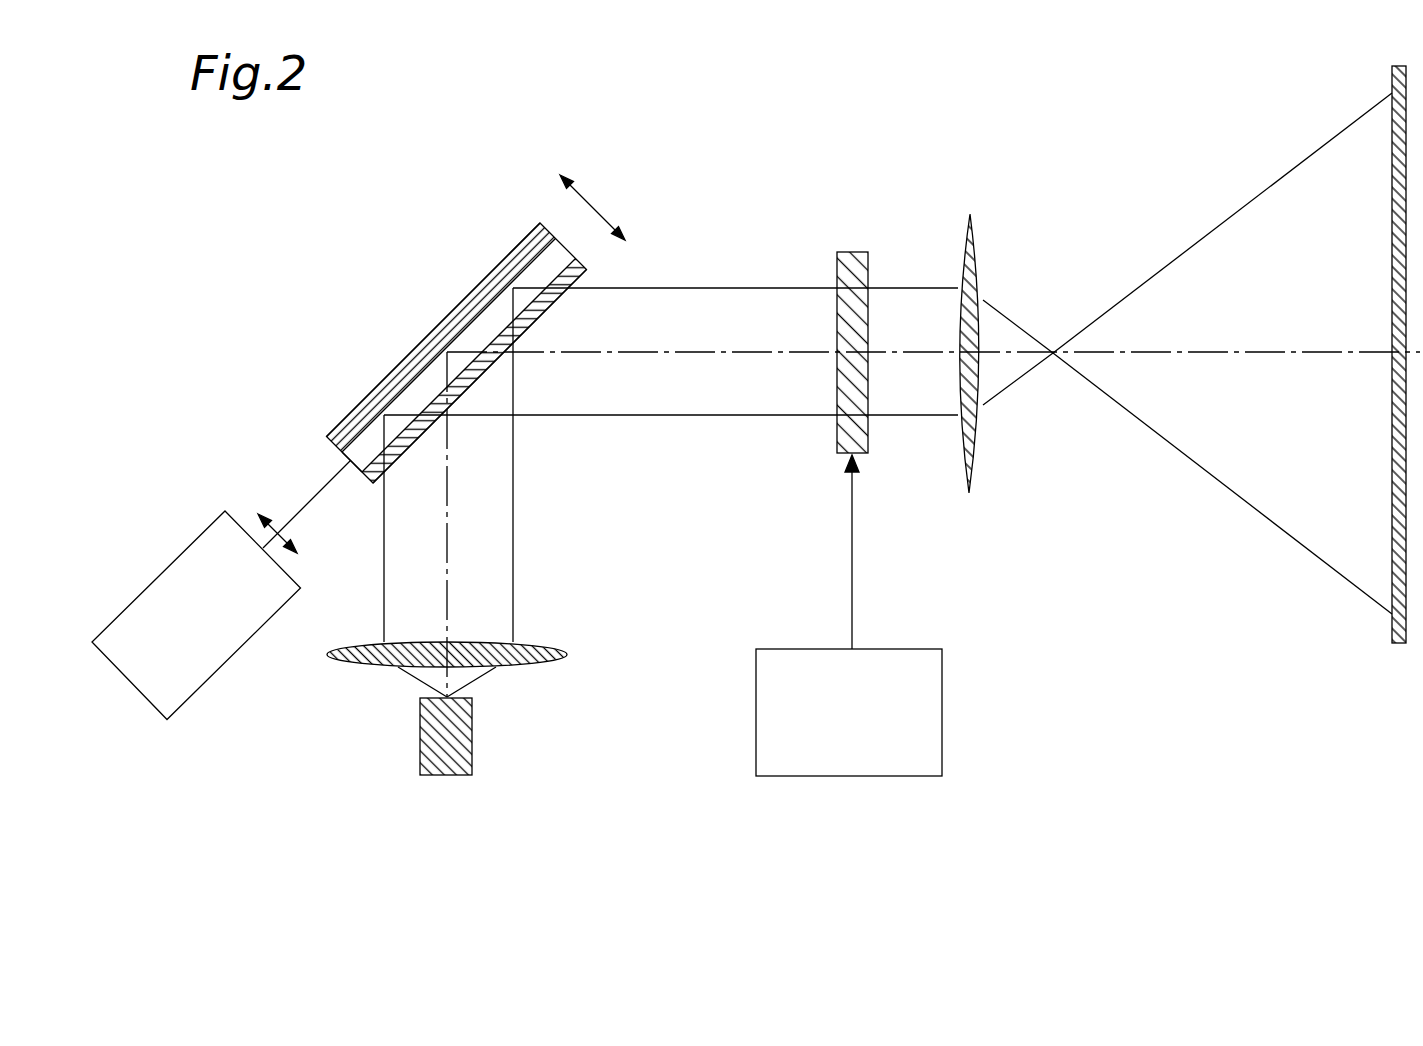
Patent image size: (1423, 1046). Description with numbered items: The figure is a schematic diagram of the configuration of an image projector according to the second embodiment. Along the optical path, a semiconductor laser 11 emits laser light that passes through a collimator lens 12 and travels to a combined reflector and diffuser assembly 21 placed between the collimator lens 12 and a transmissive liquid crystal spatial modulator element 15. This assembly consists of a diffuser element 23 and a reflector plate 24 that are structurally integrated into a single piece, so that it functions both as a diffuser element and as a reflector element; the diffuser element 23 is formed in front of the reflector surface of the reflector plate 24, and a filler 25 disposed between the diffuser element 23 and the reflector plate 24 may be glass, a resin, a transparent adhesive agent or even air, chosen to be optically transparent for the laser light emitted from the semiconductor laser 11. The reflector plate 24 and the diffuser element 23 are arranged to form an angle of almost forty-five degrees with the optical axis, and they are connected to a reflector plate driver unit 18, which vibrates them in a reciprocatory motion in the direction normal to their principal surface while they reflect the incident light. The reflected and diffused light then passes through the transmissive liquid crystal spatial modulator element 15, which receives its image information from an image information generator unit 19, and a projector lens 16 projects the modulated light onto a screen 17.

The semiconductor laser 11 is at (472, 733).
The collimator lens 12 is at (556, 656).
The transmissive liquid crystal spatial modulator element 15 is at (855, 252).
The projector lens 16 is at (978, 246).
The screen 17 is at (1391, 178).
The reflector plate driver unit 18 is at (192, 697).
The image information generator unit 19 is at (892, 649).
The reflector unit 21 is at (341, 423).
The diffuser element 23 is at (583, 265).
The reflector plate 24 is at (455, 308).
The filler 25 is at (357, 460).